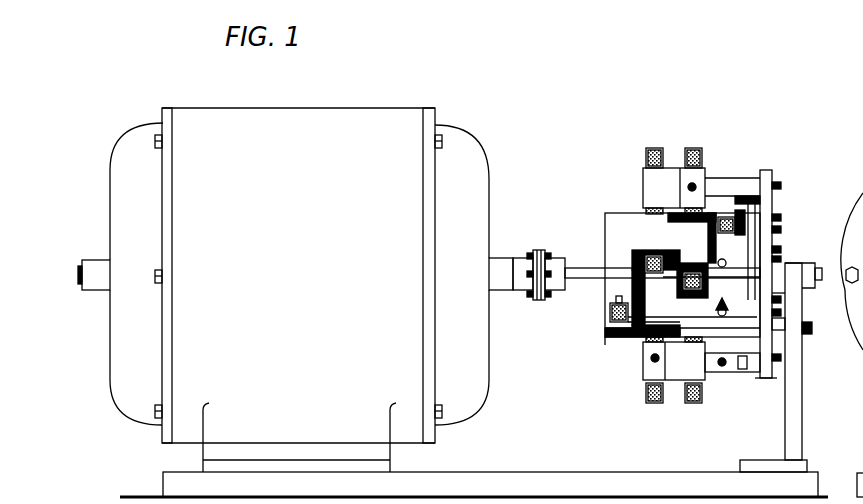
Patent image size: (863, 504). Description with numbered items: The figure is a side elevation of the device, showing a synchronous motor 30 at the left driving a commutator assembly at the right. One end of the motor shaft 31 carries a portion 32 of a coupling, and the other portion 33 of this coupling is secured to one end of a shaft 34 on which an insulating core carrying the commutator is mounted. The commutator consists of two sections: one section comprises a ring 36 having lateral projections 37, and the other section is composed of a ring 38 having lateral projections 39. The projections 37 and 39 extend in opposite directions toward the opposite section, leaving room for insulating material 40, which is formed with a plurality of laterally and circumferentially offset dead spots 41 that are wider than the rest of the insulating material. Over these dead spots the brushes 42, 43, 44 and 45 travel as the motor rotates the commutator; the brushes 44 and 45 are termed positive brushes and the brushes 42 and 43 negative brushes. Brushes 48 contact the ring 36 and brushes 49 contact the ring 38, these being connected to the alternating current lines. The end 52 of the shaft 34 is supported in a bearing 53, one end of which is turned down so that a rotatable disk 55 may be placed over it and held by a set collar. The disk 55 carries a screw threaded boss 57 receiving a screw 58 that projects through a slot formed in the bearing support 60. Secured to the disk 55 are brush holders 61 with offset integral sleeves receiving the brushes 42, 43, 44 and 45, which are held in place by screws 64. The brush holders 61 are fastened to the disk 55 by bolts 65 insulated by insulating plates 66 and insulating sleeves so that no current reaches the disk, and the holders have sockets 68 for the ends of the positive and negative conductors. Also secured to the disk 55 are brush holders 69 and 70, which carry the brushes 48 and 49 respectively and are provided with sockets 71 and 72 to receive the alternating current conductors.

The motor 30 is at (299, 290).
The shaft 31 is at (80, 273).
The portion of a coupling 32 is at (522, 292).
The other portion of the coupling 33 is at (540, 294).
The shaft 34 is at (568, 260).
The ring 36 is at (604, 340).
The lateral projections 37 is at (655, 234).
The ring 38 is at (737, 373).
The lateral projections 39 is at (684, 343).
The insulating material 40 is at (612, 282).
The dead spots 41 is at (646, 252).
The brush 42 is at (655, 143).
The brush 43 is at (694, 148).
The brush 44 is at (655, 273).
The brush 45 is at (693, 272).
The brushes 48 is at (610, 312).
The brushes 49 is at (724, 214).
The end of the shaft 52 is at (815, 273).
The bearing 53 is at (815, 288).
The rotatable disk 55 is at (768, 382).
The screw threaded boss 57 is at (778, 335).
The screw 58 is at (812, 331).
The bearing support 60 is at (803, 441).
The brush holders 61 is at (773, 173).
The screws 64 is at (694, 186).
The bolts 65 is at (782, 229).
The insulating plates 66 is at (774, 181).
The sockets 68 is at (684, 244).
The brush holder 69 is at (652, 327).
The brush holder 70 is at (760, 212).
The socket 71 is at (724, 306).
The socket 72 is at (782, 250).